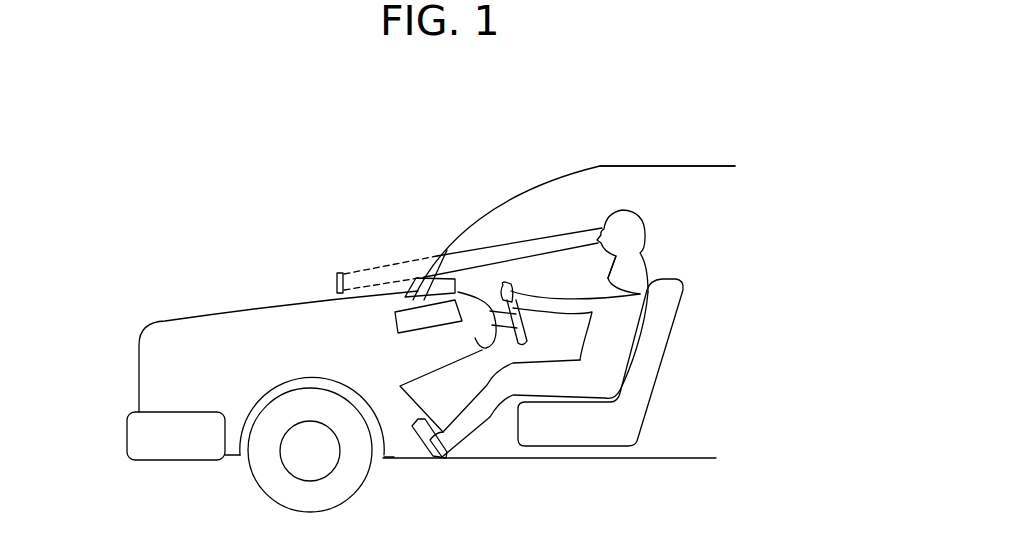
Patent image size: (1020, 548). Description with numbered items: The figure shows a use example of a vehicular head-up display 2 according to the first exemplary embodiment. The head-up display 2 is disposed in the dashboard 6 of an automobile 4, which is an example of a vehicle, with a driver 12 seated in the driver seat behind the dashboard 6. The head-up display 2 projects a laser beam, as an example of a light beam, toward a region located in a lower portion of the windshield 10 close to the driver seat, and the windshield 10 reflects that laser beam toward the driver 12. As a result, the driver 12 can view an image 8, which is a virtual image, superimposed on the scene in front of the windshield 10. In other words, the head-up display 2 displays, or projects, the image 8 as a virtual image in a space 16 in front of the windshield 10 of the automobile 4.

The head-up display 2 is at (415, 320).
The automobile 4 is at (690, 166).
The dashboard 6 is at (460, 285).
The image 8 is at (337, 272).
The windshield 10 is at (548, 182).
The driver 12 is at (633, 229).
The space 16 is at (394, 201).